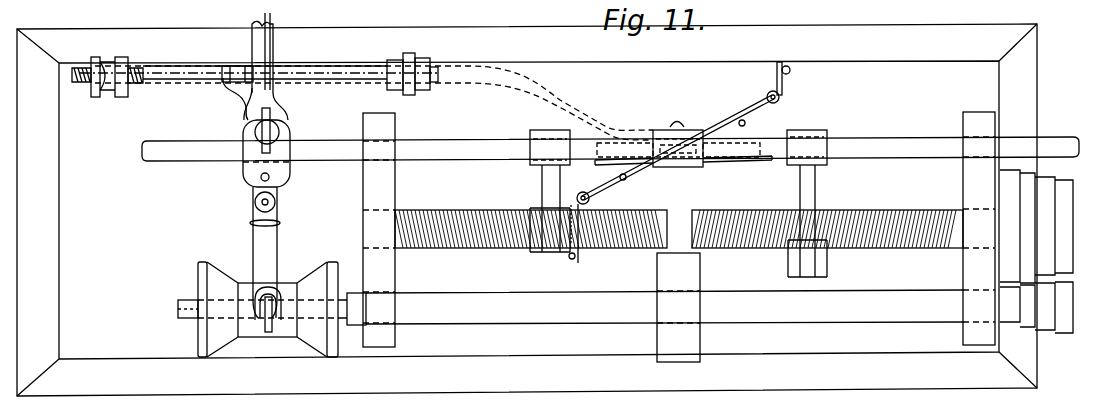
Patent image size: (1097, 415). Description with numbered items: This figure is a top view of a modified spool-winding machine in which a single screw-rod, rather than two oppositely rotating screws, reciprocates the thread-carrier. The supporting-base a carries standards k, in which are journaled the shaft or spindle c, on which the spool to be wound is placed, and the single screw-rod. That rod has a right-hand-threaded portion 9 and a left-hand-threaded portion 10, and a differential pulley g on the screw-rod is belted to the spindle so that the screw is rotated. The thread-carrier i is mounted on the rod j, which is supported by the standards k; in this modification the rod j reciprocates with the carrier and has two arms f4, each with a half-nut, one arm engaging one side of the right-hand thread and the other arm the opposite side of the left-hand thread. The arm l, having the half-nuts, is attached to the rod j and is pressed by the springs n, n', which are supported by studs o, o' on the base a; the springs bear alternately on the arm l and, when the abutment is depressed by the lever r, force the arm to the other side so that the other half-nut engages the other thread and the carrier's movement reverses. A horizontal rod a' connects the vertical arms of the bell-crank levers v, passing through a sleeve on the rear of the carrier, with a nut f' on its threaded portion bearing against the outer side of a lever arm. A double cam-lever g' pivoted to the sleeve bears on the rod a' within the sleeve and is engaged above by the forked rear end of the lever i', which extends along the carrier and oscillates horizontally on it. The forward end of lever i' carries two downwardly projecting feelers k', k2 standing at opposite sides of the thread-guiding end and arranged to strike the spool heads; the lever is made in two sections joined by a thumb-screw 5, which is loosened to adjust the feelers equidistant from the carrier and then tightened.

The rod j is at (470, 121).
The supporting-base a is at (664, 292).
The shaft or spindle c is at (181, 299).
The standards k is at (679, 229).
The feeler k2 is at (287, 331).
The feeler k' is at (280, 283).
The thread-carrier i is at (253, 283).
The thumb-screw 5 is at (270, 131).
The horizontal rod a' is at (260, 58).
The bell-crank lever v is at (123, 58).
The nut f' is at (86, 95).
The double cam-lever g' is at (494, 88).
The lever i' is at (226, 99).
The lever r is at (527, 75).
The arm l is at (678, 139).
The spring n is at (683, 168).
The spring n' is at (678, 147).
The stud o is at (594, 201).
The stud o' is at (785, 85).
The differential pulley g is at (627, 190).
The left-hand-threaded portion 10 is at (613, 247).
The right-hand-threaded portion 9 is at (857, 245).
The arm f4 is at (547, 185).